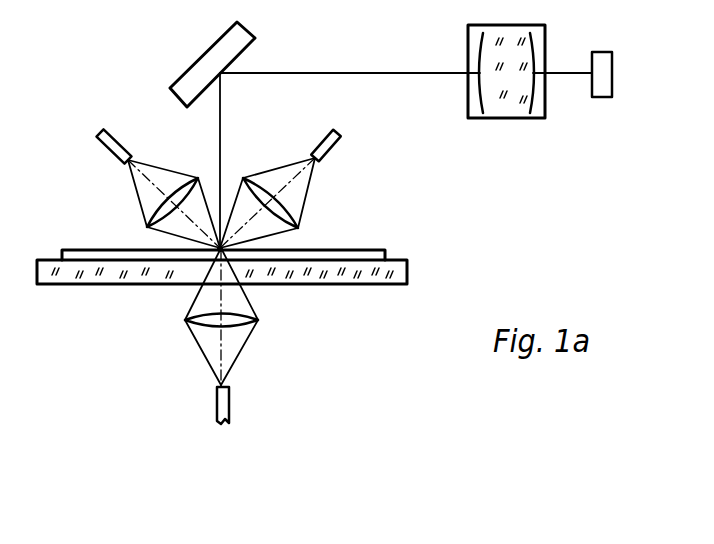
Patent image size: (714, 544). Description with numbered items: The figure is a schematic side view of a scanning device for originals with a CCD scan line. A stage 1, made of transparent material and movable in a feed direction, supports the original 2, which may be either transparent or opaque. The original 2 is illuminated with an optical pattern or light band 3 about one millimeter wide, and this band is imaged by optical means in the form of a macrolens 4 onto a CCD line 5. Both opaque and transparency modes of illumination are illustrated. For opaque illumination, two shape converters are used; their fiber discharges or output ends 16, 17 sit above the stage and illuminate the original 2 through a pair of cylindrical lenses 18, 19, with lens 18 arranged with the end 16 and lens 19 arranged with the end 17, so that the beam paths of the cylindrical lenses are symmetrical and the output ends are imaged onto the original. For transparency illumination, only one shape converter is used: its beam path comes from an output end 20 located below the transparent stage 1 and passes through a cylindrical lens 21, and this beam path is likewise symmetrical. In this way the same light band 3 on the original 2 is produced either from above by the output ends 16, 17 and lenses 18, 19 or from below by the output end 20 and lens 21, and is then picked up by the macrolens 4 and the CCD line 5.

The stage 1 is at (363, 277).
The original 2 is at (337, 255).
The light band 3 is at (197, 262).
The macrolens 4 is at (503, 113).
The CCD line 5 is at (607, 88).
The fiber output end 16 is at (110, 147).
The fiber output end 17 is at (330, 155).
The cylindrical lens 18 is at (185, 192).
The cylindrical lens 19 is at (260, 193).
The output end 20 is at (230, 402).
The cylindrical lens 21 is at (233, 322).